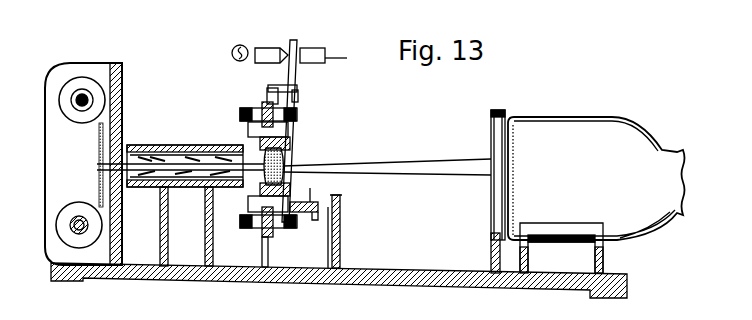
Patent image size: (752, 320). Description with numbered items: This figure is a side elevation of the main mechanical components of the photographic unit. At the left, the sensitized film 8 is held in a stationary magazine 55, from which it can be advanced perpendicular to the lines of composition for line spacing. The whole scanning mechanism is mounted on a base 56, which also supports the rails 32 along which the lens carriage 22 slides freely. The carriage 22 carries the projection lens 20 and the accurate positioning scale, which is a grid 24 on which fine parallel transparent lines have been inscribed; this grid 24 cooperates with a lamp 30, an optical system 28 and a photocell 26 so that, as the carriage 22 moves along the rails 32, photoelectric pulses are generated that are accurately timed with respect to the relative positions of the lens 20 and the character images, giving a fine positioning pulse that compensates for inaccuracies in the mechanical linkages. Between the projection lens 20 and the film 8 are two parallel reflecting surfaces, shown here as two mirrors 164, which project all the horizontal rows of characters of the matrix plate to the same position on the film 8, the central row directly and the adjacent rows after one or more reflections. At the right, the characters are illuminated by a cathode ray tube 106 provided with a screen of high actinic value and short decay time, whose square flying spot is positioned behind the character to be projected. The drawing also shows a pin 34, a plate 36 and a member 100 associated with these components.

The stationary magazine 55 is at (100, 68).
The sensitized film 8 is at (123, 118).
The mirrors 164 is at (167, 192).
The base 56 is at (398, 278).
The grid 24 is at (292, 42).
The optical system 28 is at (272, 48).
The photocell 26 is at (318, 48).
The lamp 30 is at (240, 45).
The lens carriage 22 is at (297, 137).
The projection lens 20 is at (292, 170).
The rails 32 is at (263, 107).
The pin 34 is at (310, 222).
The shield plate 36 is at (328, 232).
The reference plate 100 is at (502, 108).
The cathode ray tube 106 is at (630, 235).